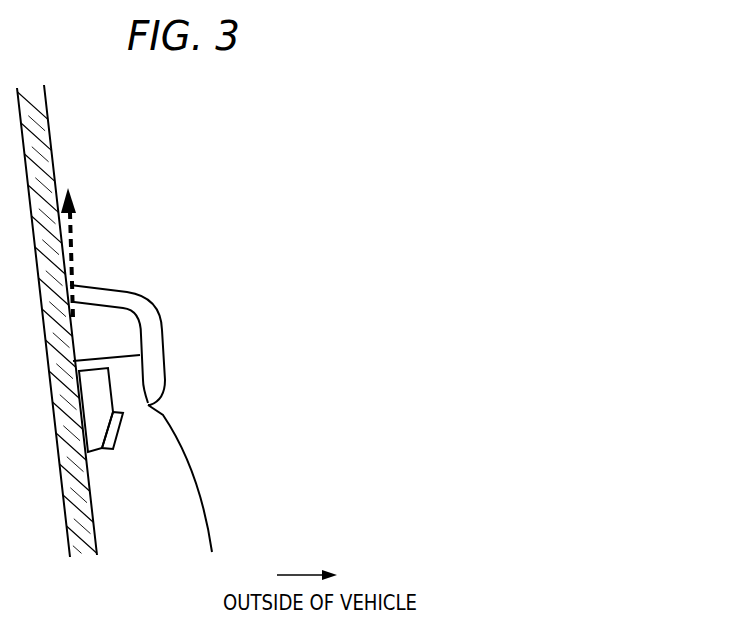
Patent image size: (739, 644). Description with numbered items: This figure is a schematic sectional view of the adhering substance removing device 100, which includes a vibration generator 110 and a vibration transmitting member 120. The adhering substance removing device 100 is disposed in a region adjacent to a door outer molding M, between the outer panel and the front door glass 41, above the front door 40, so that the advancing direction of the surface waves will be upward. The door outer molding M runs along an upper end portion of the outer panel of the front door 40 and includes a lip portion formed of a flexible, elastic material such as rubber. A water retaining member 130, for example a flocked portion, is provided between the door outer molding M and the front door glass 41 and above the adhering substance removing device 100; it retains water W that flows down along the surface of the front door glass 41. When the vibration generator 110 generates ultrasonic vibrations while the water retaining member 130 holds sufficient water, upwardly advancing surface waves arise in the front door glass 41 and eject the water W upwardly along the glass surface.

The front door glass 41 is at (50, 149).
The front door 40 is at (207, 503).
The adhering substance removing device 100 is at (216, 444).
The vibration generator 110 is at (120, 423).
The vibration transmitting member 120 is at (109, 392).
The water retaining member 130 is at (119, 334).
The door outer molding M is at (133, 300).
The water W is at (86, 252).